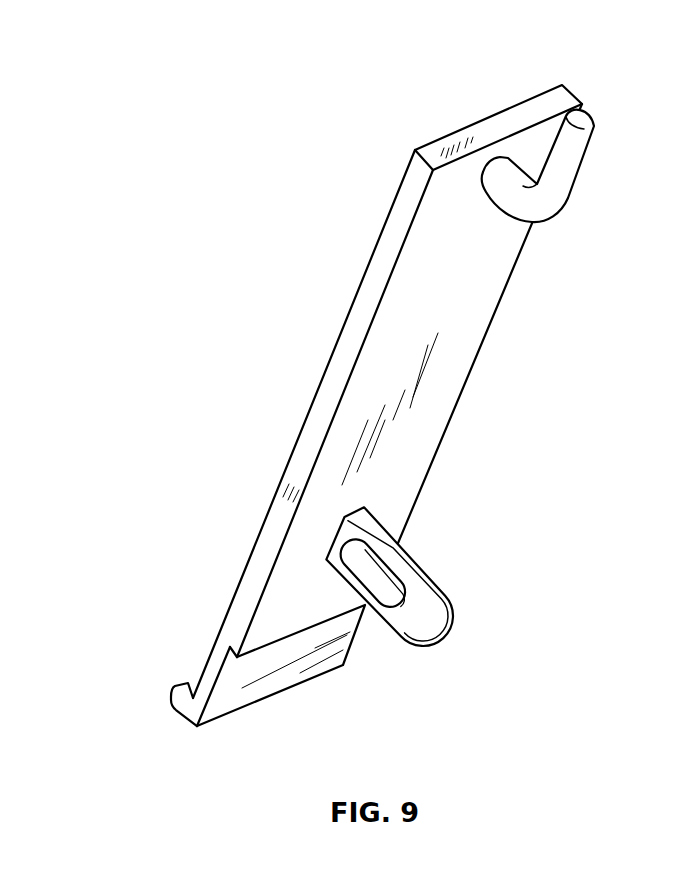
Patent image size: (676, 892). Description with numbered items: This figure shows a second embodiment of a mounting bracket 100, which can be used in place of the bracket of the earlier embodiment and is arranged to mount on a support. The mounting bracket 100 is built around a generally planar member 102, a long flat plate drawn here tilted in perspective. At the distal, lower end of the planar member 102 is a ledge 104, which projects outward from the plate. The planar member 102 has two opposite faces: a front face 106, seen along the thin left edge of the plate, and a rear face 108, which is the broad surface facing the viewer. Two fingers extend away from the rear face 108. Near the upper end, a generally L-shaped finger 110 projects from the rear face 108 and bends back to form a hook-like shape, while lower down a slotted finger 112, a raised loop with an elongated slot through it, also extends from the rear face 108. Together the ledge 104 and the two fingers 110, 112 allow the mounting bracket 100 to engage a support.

The mounting bracket 100 is at (403, 388).
The generally planar member 102 is at (443, 373).
The ledge 104 is at (194, 684).
The front face 106 is at (303, 425).
The rear face 108 is at (418, 435).
The generally L-shaped finger 110 is at (560, 172).
The slotted finger 112 is at (408, 640).